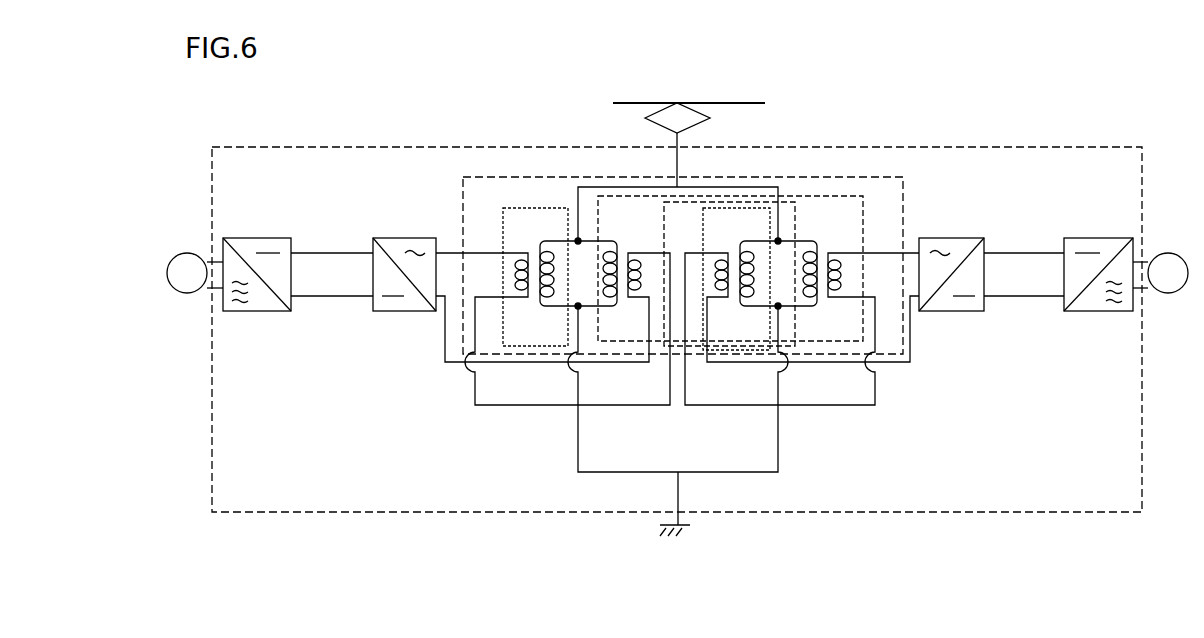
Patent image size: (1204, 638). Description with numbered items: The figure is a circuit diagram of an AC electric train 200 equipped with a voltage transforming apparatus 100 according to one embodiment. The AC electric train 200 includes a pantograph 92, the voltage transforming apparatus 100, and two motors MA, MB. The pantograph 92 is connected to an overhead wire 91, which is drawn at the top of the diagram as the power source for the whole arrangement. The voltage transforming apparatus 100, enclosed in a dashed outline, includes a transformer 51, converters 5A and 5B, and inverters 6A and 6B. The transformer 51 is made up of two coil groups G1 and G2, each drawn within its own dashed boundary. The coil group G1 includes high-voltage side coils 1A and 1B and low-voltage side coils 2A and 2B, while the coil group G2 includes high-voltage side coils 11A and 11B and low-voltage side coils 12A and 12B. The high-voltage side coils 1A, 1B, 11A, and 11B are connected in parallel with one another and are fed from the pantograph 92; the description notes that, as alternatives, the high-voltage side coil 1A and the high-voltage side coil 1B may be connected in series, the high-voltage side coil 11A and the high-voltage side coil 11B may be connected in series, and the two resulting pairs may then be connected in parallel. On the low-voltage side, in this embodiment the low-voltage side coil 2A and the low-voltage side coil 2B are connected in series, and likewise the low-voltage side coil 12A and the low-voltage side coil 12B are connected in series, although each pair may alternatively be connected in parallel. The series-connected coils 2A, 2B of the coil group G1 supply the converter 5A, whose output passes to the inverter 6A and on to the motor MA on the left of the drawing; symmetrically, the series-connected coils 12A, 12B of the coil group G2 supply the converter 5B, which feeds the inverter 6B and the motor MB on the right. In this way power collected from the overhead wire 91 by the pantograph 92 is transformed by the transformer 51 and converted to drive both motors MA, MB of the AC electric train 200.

The high-voltage side coil 1A is at (539, 289).
The high-voltage side coil 1B is at (617, 289).
The low-voltage side coil 2A is at (527, 257).
The low-voltage side coil 2B is at (627, 257).
The high-voltage side coil 11A is at (741, 289).
The high-voltage side coil 11B is at (817, 289).
The low-voltage side coil 12A is at (730, 257).
The low-voltage side coil 12B is at (826, 257).
The converter 5A is at (408, 238).
The converter 5B is at (951, 238).
The inverter 6A is at (253, 238).
The inverter 6B is at (1100, 238).
The transformer 51 is at (829, 177).
The overhead wire 91 is at (714, 101).
The pantograph 92 is at (657, 112).
The voltage transforming apparatus 100 is at (1066, 146).
The AC electric train 200 is at (1118, 80).
The coil group G1 is at (537, 208).
The coil group G2 is at (843, 196).
The motor MA is at (184, 253).
The motor MB is at (1170, 253).